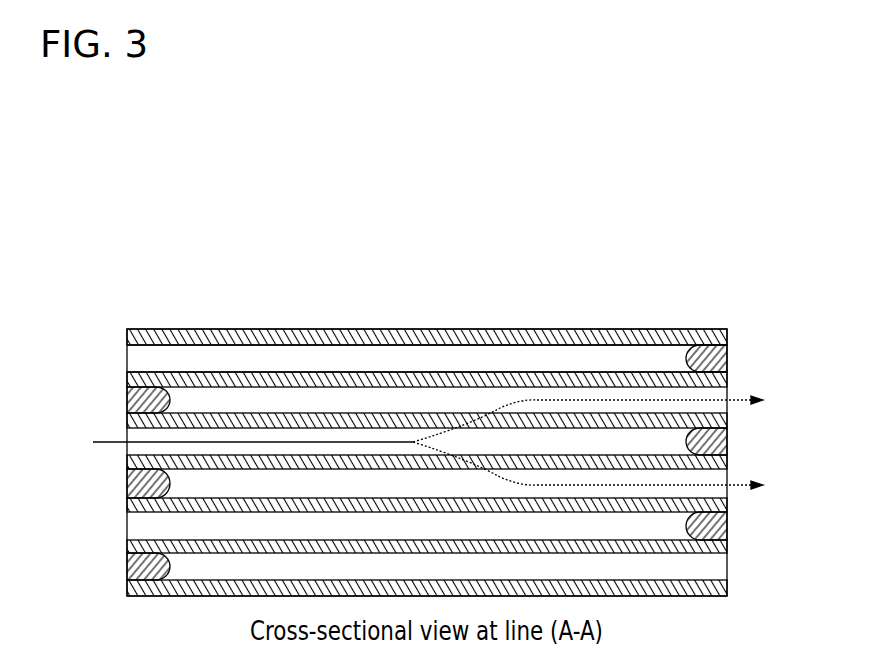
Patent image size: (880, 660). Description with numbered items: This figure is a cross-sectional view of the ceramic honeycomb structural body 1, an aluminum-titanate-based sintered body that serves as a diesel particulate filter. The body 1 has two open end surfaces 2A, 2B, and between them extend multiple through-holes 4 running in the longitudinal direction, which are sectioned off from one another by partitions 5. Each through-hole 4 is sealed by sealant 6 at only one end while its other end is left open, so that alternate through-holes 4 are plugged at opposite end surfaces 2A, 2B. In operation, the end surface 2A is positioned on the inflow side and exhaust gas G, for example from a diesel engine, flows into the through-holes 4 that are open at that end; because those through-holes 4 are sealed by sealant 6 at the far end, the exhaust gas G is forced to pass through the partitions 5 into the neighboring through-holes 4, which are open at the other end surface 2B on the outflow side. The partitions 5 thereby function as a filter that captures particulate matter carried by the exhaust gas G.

The ceramic body 1 is at (195, 297).
The through-hole 4 is at (137, 362).
The partition 5 is at (300, 376).
The sealant 6 is at (727, 358).
The end surface 2A is at (127, 566).
The end surface 2B is at (727, 527).
The exhaust gas G is at (417, 442).